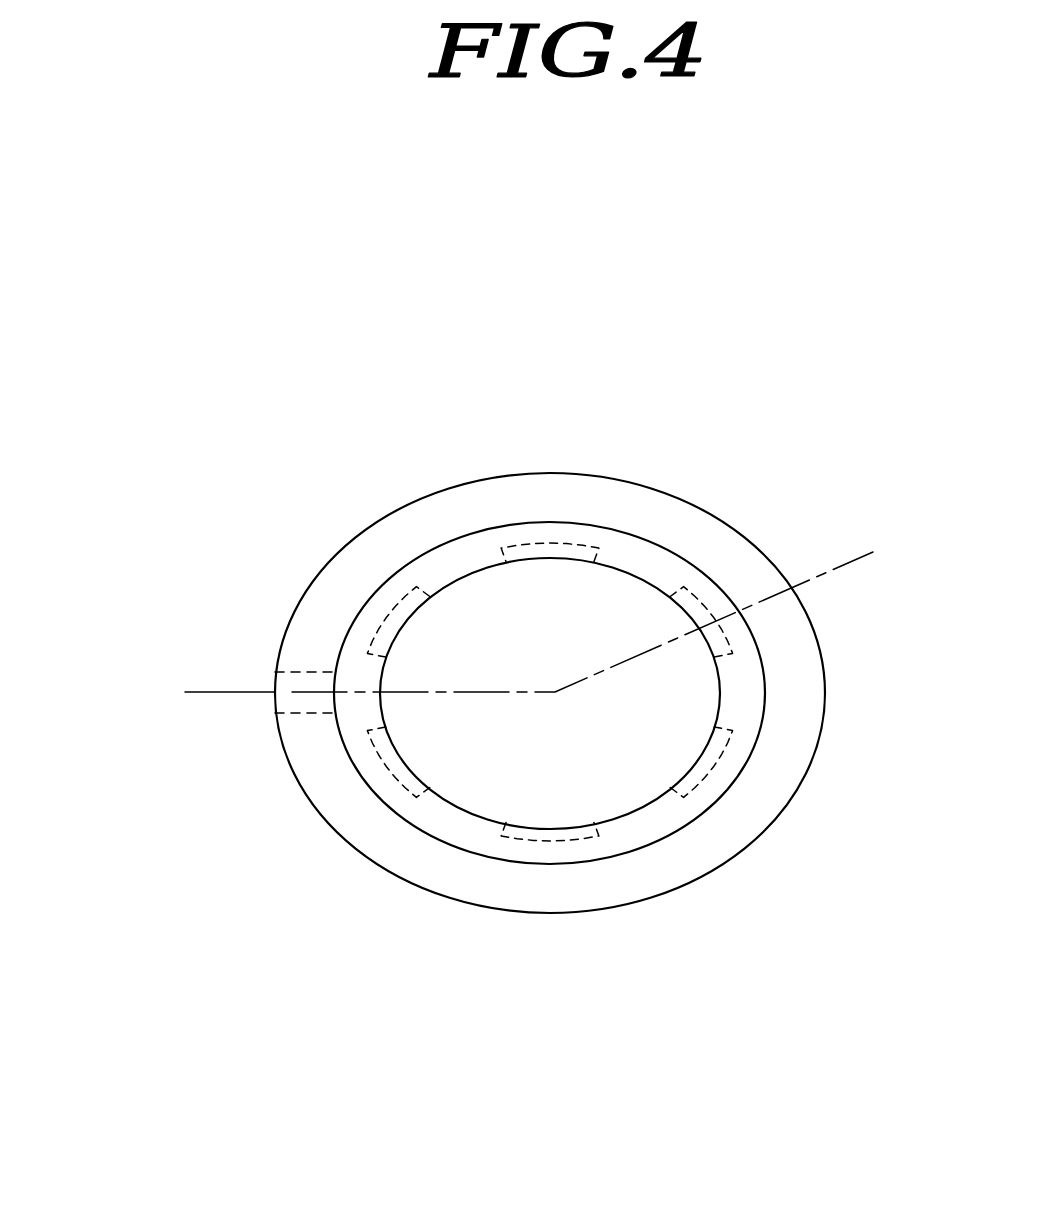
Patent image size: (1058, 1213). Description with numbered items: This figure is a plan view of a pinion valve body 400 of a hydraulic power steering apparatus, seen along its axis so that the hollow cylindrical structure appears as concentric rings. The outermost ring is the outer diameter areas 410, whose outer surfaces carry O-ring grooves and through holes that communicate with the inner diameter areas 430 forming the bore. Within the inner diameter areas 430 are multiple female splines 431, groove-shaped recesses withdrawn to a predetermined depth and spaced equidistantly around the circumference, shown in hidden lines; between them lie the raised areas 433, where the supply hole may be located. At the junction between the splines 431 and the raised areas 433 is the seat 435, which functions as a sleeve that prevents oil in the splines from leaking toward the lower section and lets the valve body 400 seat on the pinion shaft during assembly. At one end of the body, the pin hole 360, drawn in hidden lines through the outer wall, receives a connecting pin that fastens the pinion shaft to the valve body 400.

The pinion valve body 400 is at (723, 458).
The outer diameter areas 410 is at (610, 912).
The inner diameter areas 430 is at (470, 1026).
The female splines 431 is at (545, 847).
The raised areas 433 is at (465, 817).
The seat 435 is at (438, 558).
The pin hole 360 is at (286, 678).